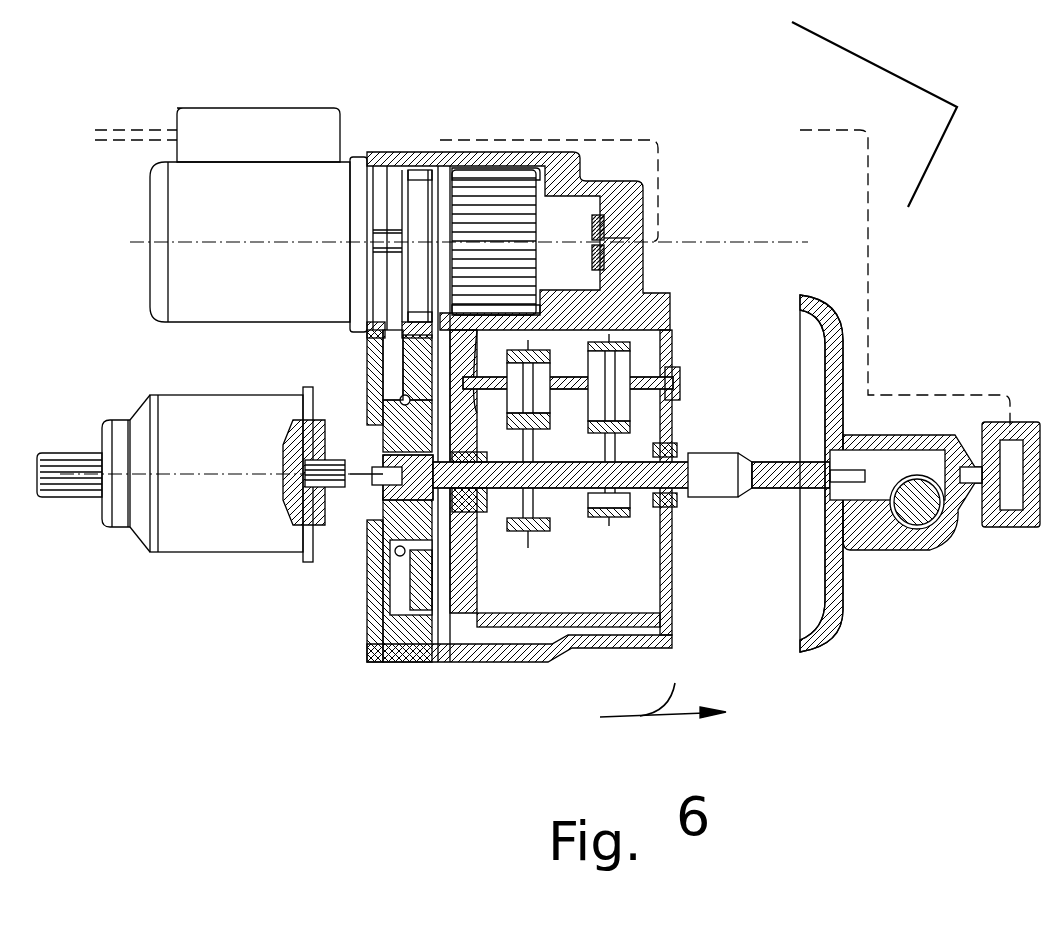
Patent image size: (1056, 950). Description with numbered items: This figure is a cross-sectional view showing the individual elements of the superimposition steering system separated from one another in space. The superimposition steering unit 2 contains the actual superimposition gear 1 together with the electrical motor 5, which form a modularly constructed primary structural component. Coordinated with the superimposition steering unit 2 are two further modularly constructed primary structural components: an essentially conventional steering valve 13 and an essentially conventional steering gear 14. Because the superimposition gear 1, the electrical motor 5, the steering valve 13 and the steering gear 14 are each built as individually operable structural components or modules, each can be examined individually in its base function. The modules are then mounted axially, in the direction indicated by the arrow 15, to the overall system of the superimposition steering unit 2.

The superimposition gear 1 is at (517, 610).
The superimposition steering unit 2 is at (957, 107).
The electrical motor 5 is at (195, 202).
The steering valve 13 is at (197, 532).
The steering gear 14 is at (903, 537).
The arrow 15 is at (670, 650).